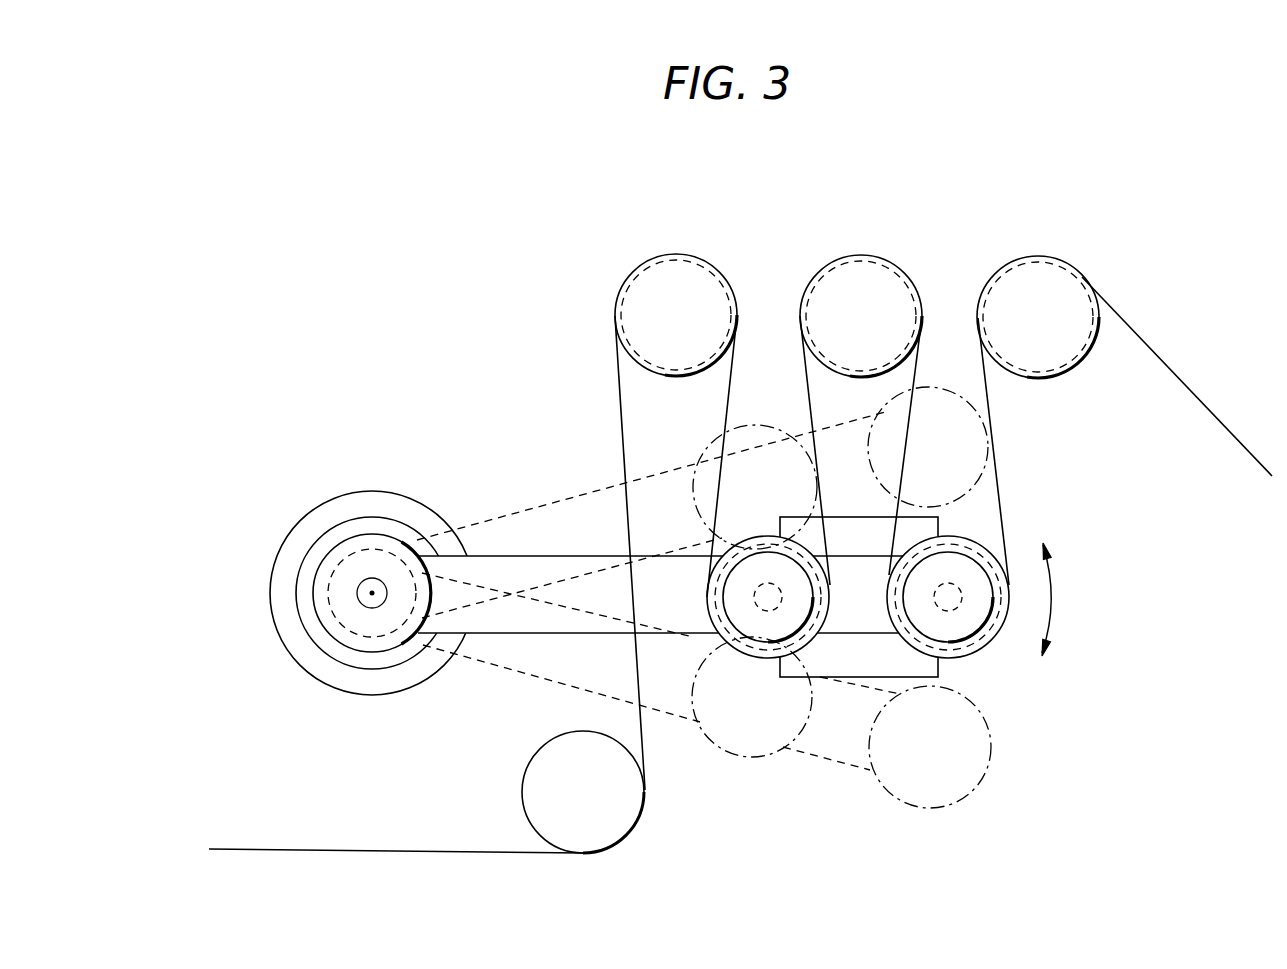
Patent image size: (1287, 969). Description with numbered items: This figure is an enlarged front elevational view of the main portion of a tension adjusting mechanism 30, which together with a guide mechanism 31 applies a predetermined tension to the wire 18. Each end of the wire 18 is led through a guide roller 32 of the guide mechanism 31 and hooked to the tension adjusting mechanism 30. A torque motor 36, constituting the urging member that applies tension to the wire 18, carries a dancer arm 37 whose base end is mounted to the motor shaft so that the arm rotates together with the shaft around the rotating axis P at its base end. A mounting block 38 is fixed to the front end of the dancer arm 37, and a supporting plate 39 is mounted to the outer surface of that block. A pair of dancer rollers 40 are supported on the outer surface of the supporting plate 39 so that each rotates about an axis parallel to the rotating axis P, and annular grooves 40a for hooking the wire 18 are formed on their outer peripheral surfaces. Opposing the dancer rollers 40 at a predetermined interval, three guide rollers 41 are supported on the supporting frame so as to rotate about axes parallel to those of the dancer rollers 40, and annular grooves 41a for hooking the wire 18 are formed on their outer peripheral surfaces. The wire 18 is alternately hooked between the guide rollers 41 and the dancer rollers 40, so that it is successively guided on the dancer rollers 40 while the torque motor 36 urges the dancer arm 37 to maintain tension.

The wire 18 is at (347, 850).
The tension adjusting mechanism 30 is at (384, 484).
The guide mechanism 31 is at (512, 817).
The guide roller 32 is at (585, 838).
The torque motor 36 is at (312, 573).
The dancer arm 37 is at (587, 566).
The mounting block 38 is at (833, 670).
The supporting plate 39 is at (833, 622).
The dancer roller 40 is at (710, 592).
The annular groove 40a is at (728, 636).
The guide roller 41 is at (722, 272).
The annular groove 41a is at (797, 307).
The rotating axis P is at (372, 600).